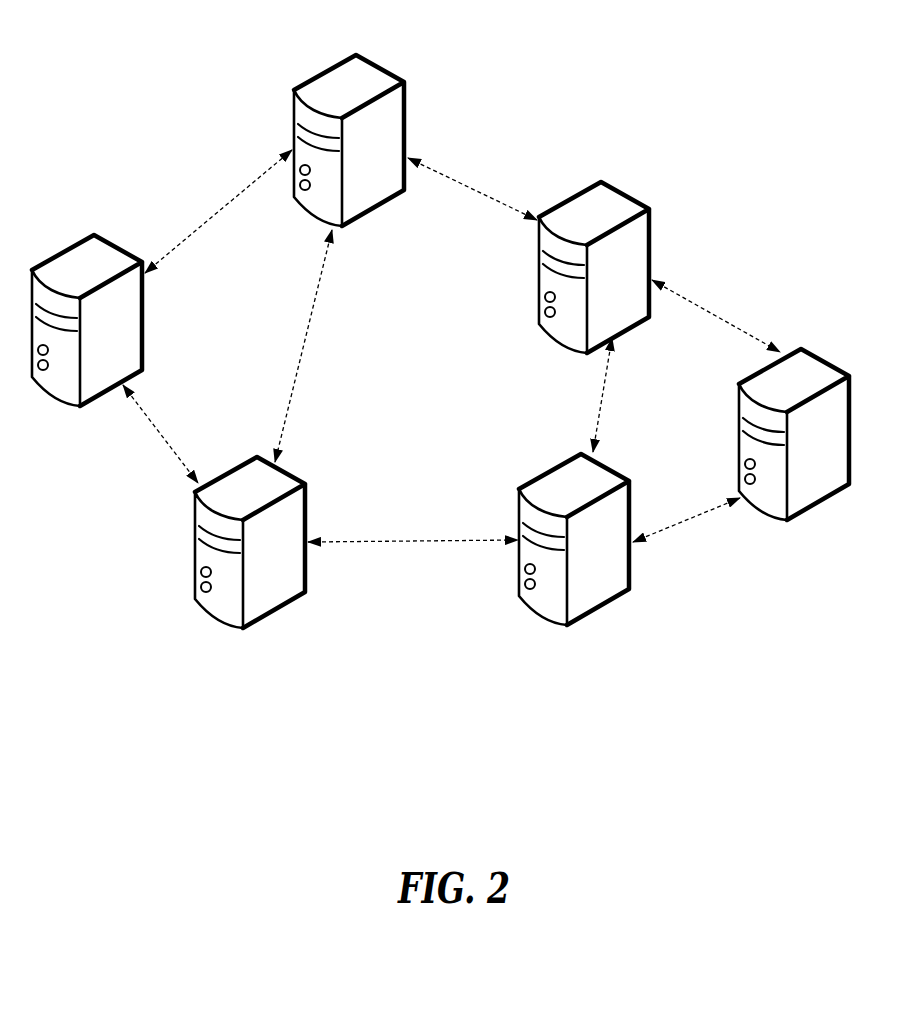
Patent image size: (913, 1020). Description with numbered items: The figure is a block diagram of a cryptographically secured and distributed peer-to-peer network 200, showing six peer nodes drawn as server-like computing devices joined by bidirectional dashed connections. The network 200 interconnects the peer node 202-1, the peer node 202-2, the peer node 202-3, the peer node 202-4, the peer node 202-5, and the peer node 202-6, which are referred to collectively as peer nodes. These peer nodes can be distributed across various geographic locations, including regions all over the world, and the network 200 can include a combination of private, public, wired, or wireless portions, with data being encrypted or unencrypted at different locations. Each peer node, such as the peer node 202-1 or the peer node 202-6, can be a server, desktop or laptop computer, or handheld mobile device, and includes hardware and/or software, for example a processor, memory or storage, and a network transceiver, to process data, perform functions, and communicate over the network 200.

The network 200 is at (847, 75).
The peer node 202-1 is at (68, 249).
The peer node 202-2 is at (380, 204).
The peer node 202-3 is at (260, 617).
The peer node 202-4 is at (594, 186).
The peer node 202-5 is at (590, 612).
The peer node 202-6 is at (800, 350).